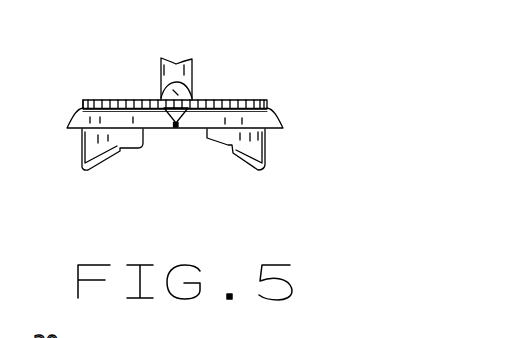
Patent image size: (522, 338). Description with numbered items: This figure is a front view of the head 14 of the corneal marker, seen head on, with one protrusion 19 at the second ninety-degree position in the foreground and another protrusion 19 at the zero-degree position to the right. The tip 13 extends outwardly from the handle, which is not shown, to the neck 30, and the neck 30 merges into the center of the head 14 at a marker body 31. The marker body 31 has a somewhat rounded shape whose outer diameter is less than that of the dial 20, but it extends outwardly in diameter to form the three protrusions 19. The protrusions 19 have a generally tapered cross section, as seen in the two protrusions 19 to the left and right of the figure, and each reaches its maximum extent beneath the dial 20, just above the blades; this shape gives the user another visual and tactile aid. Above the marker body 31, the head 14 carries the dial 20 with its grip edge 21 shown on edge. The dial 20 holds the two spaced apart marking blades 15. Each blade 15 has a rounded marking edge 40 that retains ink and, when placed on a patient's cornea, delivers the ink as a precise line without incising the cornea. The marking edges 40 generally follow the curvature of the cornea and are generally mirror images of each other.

The tip 13 is at (177, 63).
The head 14 is at (142, 70).
The marking blades 15 is at (81, 153).
The protrusions 19 is at (68, 123).
The dial 20 is at (223, 99).
The grip edge 21 is at (83, 100).
The neck 30 is at (161, 80).
The marker body 31 is at (245, 113).
The marking edge 40 is at (102, 168).